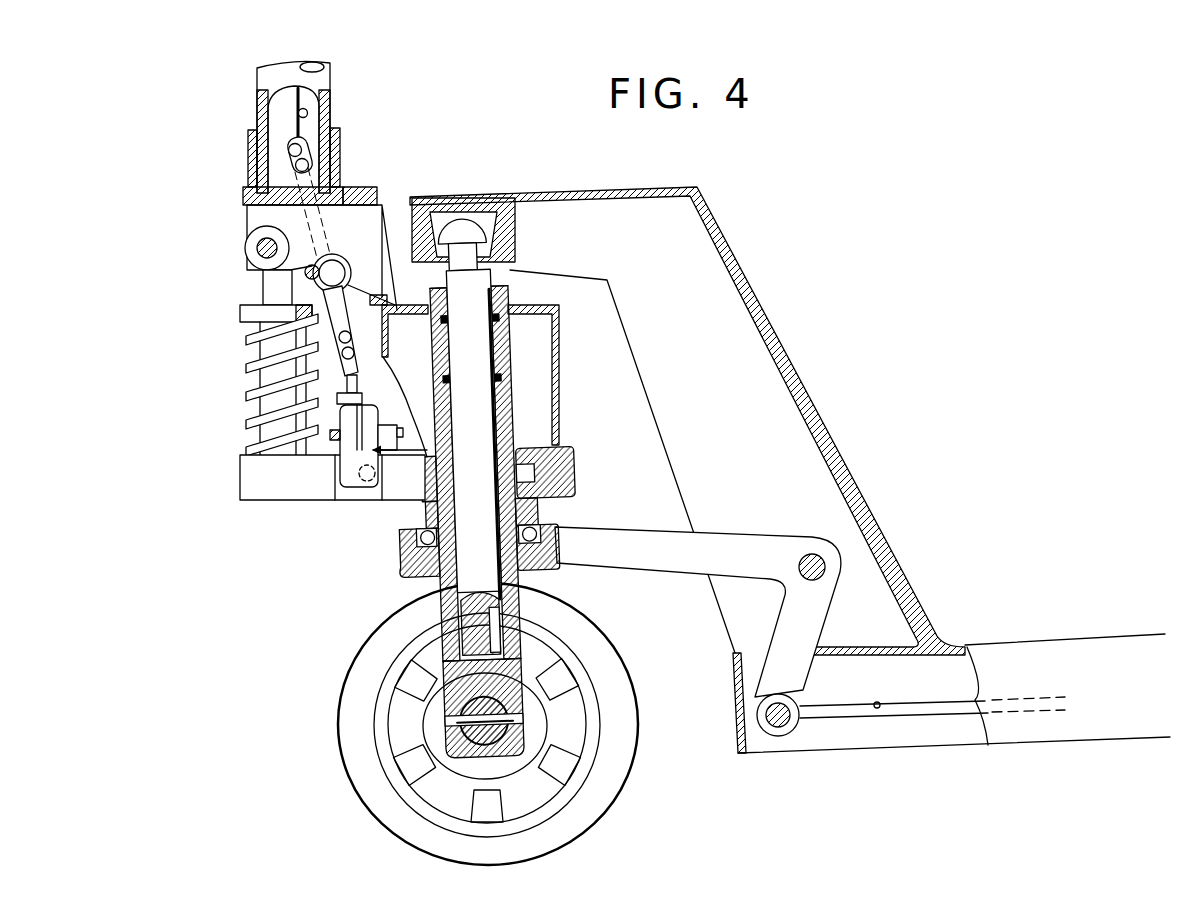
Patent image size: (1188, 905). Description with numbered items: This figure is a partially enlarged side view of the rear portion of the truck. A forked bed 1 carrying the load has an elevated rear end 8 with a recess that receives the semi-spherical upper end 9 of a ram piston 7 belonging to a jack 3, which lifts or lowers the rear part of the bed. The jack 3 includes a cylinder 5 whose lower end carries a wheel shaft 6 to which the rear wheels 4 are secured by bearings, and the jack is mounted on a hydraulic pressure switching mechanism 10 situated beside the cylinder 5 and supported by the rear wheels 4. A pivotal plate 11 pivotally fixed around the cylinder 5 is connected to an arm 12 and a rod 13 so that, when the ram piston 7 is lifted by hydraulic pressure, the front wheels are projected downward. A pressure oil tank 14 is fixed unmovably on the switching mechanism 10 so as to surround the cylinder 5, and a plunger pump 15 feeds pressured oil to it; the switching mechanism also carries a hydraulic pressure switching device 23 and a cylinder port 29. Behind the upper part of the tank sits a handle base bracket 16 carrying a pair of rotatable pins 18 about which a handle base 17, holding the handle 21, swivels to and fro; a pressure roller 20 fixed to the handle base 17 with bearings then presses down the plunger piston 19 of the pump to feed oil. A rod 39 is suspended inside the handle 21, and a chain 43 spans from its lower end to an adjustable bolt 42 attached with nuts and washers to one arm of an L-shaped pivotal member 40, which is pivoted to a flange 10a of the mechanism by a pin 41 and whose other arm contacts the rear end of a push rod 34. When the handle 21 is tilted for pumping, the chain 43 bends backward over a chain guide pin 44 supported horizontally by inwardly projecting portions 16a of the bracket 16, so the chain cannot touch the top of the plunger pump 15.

The forked bed 1 is at (1008, 660).
The jack 3 is at (165, 400).
The rear wheels 4 is at (352, 712).
The cylinder 5 is at (437, 650).
The wheel shaft 6 is at (476, 740).
The ram piston 7 is at (477, 408).
The elevated rear end 8 is at (609, 188).
The semi-spherical upper end 9 is at (478, 212).
The hydraulic pressure switching mechanism 10 is at (262, 497).
The flange 10a is at (336, 462).
The pivotal plate 11 is at (552, 548).
The arm 12 is at (677, 562).
The rod 13 is at (877, 723).
The pressure oil tank 14 is at (558, 350).
The plunger pump 15 is at (273, 408).
The handle base bracket 16 is at (365, 200).
The inwardly projecting portions 16a is at (347, 260).
The handle base 17 is at (345, 142).
The rotatable pins 18 is at (268, 305).
The plunger piston 19 is at (274, 289).
The pressure roller 20 is at (262, 233).
The handle 21 is at (322, 78).
The hydraulic pressure switching device 23 is at (387, 484).
The cylinder port 29 is at (560, 470).
The push rod 34 is at (368, 484).
The rod 39 is at (298, 110).
The L-shaped pivotal member 40 is at (356, 484).
The pin 41 is at (330, 434).
The adjustable bolt 42 is at (336, 378).
The chain 43 is at (292, 152).
The chain guide pin 44 is at (305, 270).